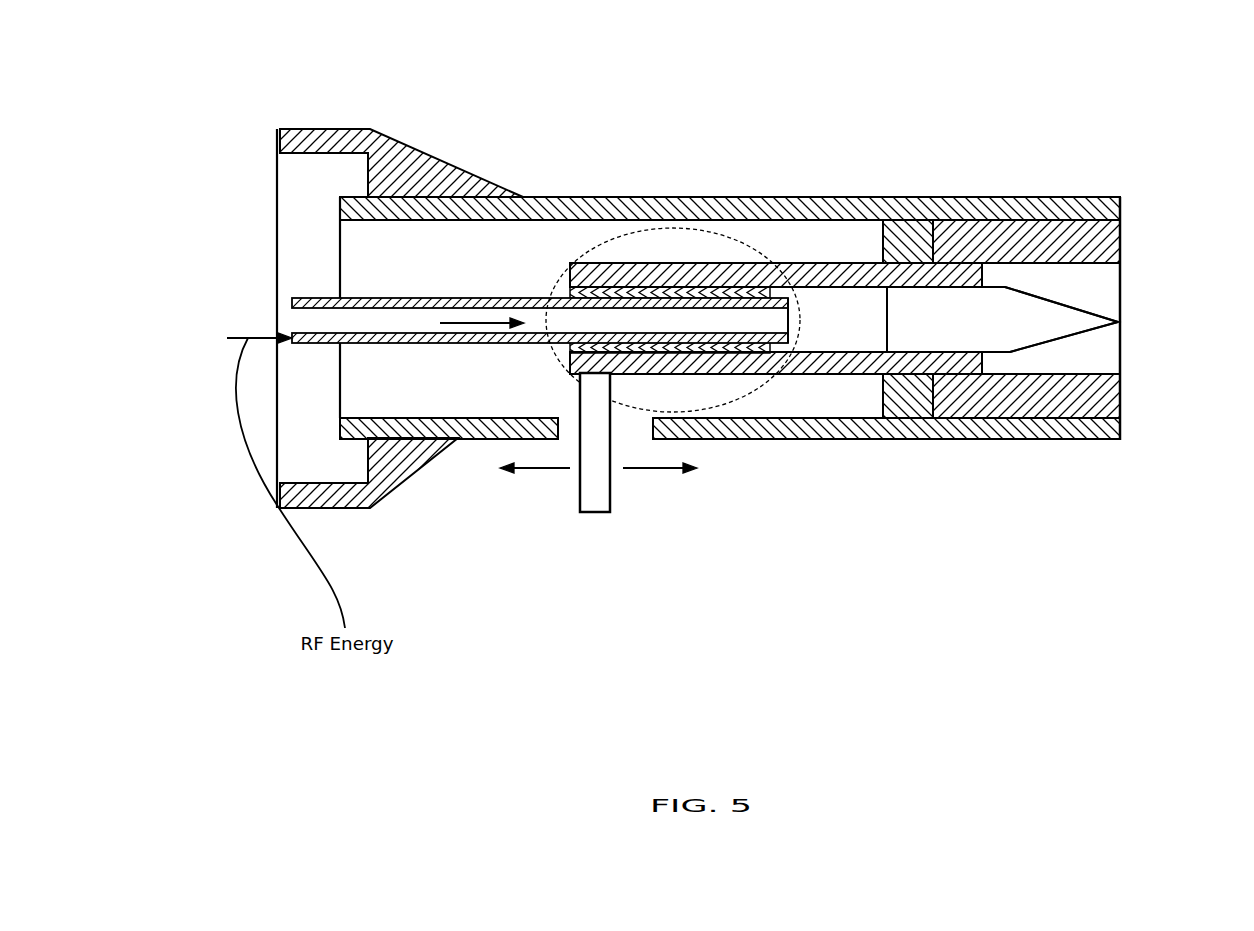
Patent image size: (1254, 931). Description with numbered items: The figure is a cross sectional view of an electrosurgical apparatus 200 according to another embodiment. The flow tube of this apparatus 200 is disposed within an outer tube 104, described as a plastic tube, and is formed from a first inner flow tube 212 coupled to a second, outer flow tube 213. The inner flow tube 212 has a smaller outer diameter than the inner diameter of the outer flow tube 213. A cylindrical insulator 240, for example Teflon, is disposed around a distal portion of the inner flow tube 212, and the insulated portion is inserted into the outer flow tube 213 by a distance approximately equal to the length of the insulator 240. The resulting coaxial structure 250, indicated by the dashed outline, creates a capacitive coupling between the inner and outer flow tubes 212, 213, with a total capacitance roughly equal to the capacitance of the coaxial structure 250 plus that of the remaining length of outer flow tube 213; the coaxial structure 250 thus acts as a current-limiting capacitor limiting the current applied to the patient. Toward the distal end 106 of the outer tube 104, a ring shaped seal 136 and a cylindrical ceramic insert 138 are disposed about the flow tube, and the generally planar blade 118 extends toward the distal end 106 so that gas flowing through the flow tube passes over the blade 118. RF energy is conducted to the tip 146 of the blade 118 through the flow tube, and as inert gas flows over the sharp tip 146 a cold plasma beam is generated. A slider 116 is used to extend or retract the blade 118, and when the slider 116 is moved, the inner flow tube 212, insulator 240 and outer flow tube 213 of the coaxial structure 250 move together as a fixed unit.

The apparatus 200 is at (318, 98).
The outer tube 104 is at (520, 208).
The distal end 106 is at (1090, 168).
The seal 136 is at (888, 588).
The ceramic insert 138 is at (965, 552).
The inner flow tube 212 is at (413, 300).
The outer flow tube 213 is at (832, 275).
The insulator 240 is at (783, 297).
The blade 118 is at (995, 328).
The tip 146 is at (1118, 322).
The coaxial structure 250 is at (760, 387).
The slider 116 is at (595, 497).